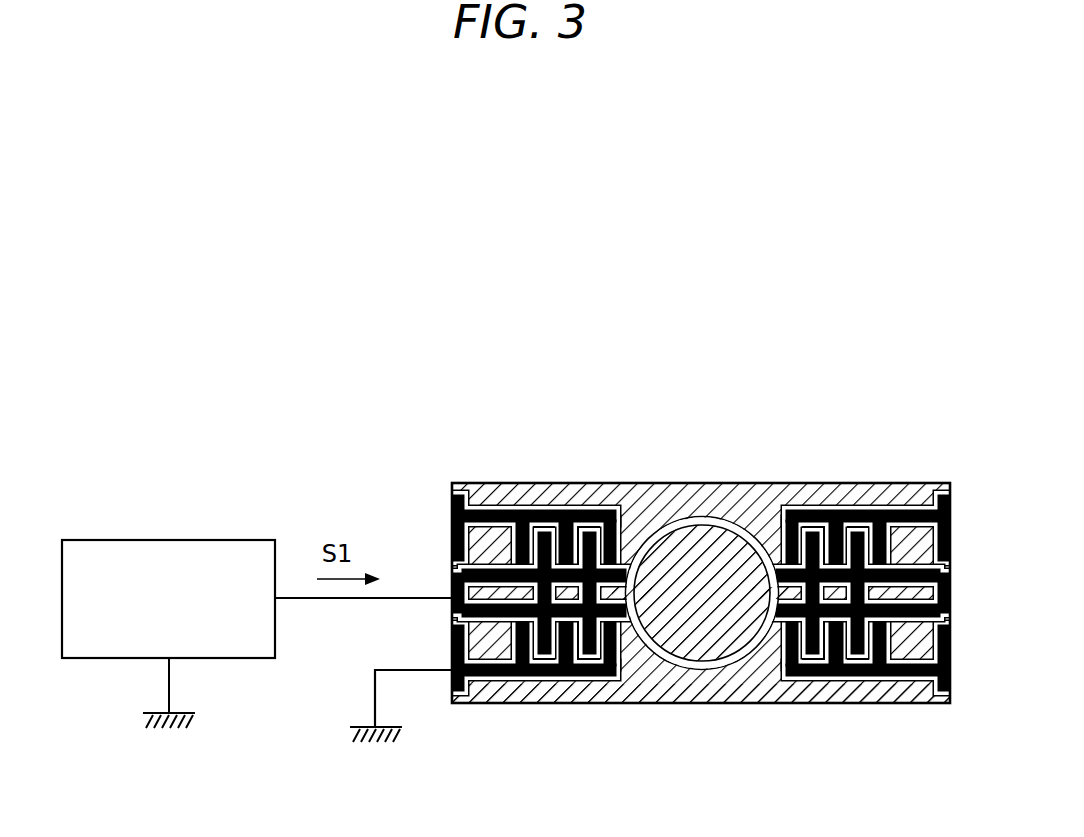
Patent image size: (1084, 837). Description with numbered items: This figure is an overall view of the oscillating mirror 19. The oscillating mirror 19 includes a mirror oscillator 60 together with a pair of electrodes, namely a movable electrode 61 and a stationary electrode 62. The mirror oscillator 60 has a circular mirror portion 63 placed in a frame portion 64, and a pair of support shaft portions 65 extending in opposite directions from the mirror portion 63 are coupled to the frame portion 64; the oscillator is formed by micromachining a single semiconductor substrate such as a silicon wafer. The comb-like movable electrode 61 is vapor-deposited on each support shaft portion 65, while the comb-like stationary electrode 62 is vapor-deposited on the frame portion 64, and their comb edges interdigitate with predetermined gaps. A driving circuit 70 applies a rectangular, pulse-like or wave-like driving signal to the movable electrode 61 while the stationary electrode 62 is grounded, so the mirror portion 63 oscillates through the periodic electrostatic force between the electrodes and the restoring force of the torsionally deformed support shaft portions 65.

The oscillating mirror 19 is at (717, 452).
The mirror oscillator 60 is at (697, 678).
The movable electrode 61 is at (541, 647).
The stationary electrode 62 is at (484, 500).
The mirror portion 63 is at (663, 547).
The frame portion 64 is at (802, 690).
The support shaft portions 65 is at (577, 583).
The driving circuit 70 is at (177, 541).